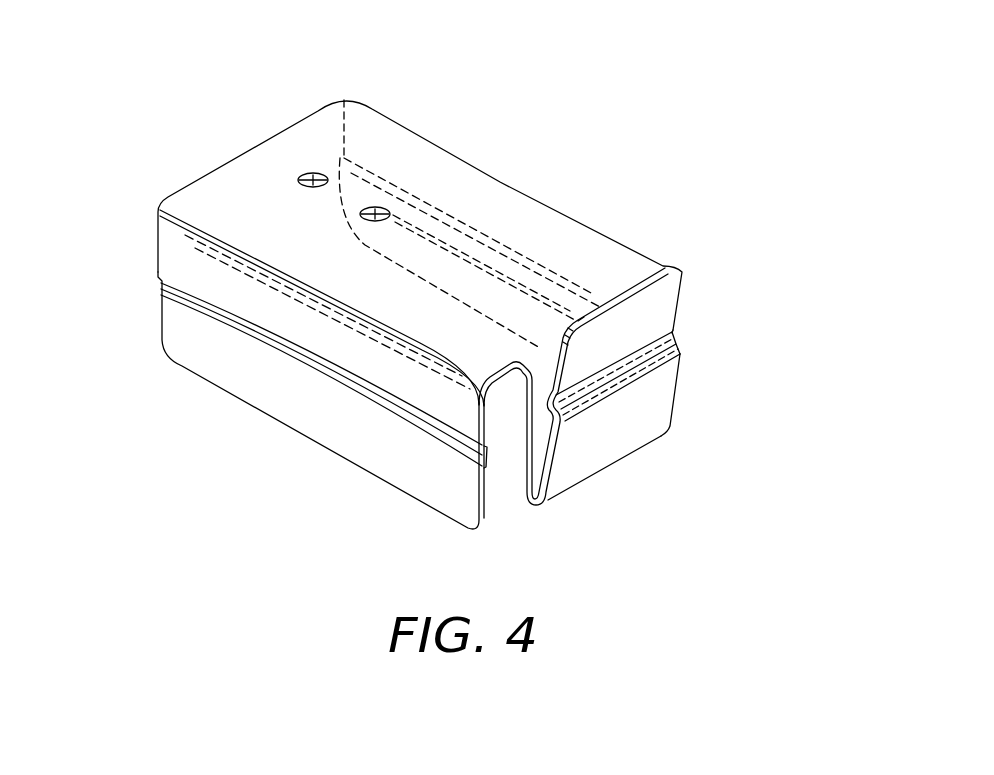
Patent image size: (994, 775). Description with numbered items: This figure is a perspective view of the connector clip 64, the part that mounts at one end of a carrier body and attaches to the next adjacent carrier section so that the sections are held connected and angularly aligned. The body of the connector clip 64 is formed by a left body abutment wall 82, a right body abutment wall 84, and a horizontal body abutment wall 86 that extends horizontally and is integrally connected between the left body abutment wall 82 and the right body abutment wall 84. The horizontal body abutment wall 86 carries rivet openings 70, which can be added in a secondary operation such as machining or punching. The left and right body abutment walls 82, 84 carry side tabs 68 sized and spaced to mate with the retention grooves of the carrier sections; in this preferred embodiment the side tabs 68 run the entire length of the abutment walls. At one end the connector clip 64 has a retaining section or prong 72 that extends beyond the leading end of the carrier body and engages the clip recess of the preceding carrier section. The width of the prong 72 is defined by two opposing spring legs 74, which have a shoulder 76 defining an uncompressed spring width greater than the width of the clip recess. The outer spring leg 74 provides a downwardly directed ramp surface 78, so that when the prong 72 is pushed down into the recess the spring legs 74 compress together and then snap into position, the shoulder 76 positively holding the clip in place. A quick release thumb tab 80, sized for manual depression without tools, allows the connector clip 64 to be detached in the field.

The connector clip 64 is at (220, 115).
The side tabs 68 is at (478, 245).
The rivet openings 70 is at (373, 208).
The prong 72 is at (627, 457).
The spring legs 74 is at (556, 470).
The shoulder 76 is at (678, 336).
The ramp surface 78 is at (663, 391).
The thumb tab 80 is at (668, 282).
The left body abutment wall 82 is at (430, 170).
The right body abutment wall 84 is at (330, 420).
The horizontal body abutment wall 86 is at (218, 190).